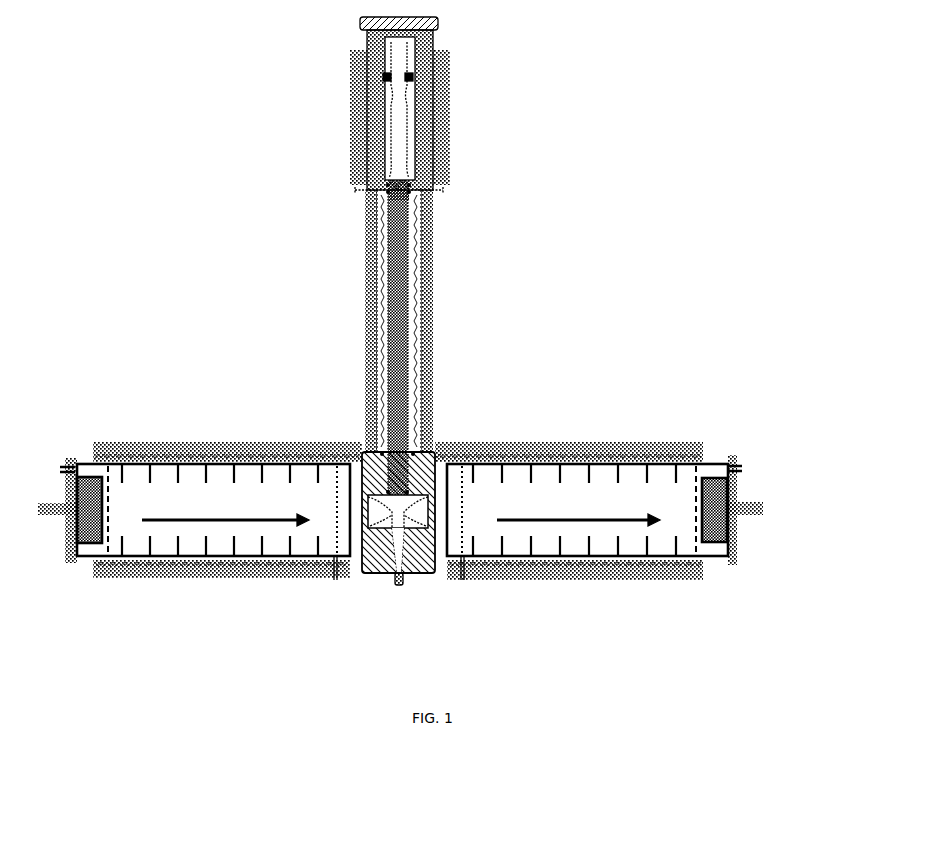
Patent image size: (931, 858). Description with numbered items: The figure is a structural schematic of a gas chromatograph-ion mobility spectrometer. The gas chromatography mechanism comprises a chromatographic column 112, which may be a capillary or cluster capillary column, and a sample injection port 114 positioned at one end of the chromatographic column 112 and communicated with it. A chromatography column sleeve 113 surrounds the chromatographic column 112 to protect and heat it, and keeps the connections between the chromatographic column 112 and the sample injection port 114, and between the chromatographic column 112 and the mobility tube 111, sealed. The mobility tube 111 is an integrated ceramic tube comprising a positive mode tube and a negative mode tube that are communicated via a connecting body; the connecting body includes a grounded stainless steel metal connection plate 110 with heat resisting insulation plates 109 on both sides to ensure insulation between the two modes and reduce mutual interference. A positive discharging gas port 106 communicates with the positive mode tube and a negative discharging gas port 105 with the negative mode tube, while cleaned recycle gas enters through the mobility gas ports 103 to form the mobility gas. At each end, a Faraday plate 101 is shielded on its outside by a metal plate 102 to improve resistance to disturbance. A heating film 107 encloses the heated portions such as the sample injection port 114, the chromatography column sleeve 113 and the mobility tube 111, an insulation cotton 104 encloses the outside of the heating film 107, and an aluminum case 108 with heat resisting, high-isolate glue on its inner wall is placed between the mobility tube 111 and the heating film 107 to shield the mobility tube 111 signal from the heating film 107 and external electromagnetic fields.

The Faraday plate 101 is at (763, 510).
The metal plate 102 is at (737, 555).
The mobility gas port 103 is at (742, 467).
The insulation cotton 104 is at (625, 577).
The negative discharging gas port 105 is at (463, 578).
The positive discharging gas port 106 is at (333, 580).
The heating film 107 is at (235, 562).
The aluminum case 108 is at (140, 560).
The heat resisting insulation plate 109 is at (347, 460).
The metal connection plate 110 is at (433, 445).
The mobility tube 111 is at (202, 478).
The chromatographic column 112 is at (408, 382).
The chromatography column sleeve 113 is at (387, 398).
The sample injection port 114 is at (363, 127).